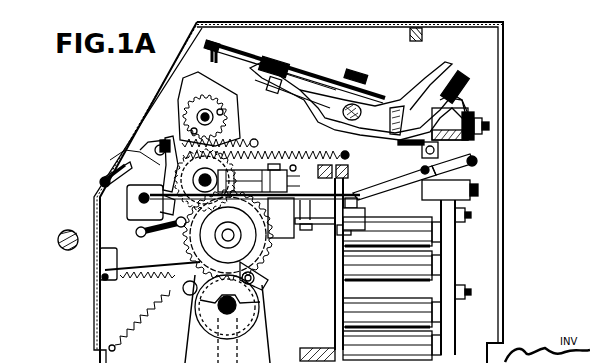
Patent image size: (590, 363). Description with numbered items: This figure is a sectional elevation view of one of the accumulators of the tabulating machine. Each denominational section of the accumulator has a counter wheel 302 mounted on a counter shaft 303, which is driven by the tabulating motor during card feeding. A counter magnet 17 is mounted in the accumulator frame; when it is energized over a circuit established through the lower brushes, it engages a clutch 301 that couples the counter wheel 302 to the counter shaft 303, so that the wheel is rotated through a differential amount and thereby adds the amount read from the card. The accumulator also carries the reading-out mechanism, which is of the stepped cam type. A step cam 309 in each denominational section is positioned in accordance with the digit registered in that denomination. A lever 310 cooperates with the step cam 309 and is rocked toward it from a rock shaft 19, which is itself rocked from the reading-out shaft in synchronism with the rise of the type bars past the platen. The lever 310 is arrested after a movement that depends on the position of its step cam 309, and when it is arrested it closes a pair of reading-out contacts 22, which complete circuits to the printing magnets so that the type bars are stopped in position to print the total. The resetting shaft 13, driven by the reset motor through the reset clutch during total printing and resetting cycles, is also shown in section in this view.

The resetting shaft 13 is at (68, 250).
The counter magnet 17 is at (413, 261).
The rock shaft 19 is at (341, 123).
The reading-out contacts 22 is at (467, 111).
The clutch 301 is at (104, 176).
The counter wheel 302 is at (162, 142).
The counter shaft 303 is at (134, 150).
The step cam 309 is at (170, 96).
The lever 310 is at (306, 97).